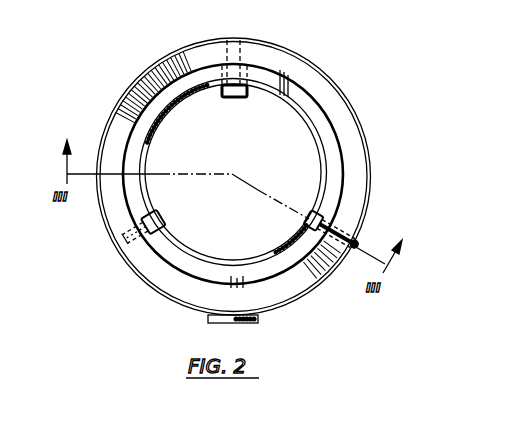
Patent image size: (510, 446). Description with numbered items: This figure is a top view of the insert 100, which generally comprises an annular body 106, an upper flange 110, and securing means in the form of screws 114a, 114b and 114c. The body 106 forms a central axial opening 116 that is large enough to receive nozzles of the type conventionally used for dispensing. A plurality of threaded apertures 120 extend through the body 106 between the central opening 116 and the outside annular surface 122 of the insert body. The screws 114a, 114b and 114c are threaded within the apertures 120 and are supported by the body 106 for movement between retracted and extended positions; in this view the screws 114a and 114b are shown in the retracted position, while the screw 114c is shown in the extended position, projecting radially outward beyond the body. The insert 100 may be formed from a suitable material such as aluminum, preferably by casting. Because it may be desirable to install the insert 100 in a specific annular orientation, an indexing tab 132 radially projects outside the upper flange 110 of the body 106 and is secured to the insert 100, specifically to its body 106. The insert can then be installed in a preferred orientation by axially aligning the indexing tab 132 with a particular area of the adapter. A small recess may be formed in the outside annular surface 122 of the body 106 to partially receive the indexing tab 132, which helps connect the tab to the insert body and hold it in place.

The insert 100 is at (351, 69).
The annular body 106 is at (355, 165).
The upper flange 110 is at (149, 76).
The screw 114a is at (242, 38).
The screw 114b is at (118, 249).
The screw 114c is at (366, 222).
The central axial opening 116 is at (281, 149).
The threaded apertures 120 is at (228, 60).
The outside annular surface 122 is at (177, 300).
The indexing tab 132 is at (254, 324).